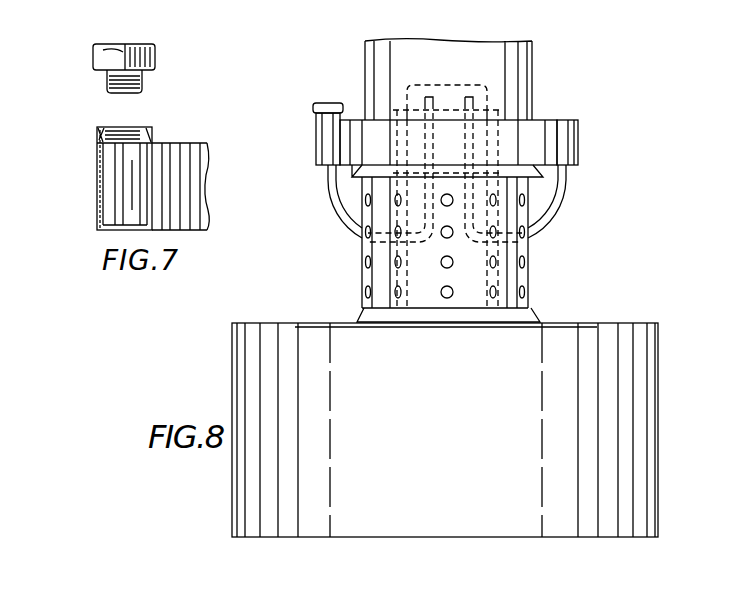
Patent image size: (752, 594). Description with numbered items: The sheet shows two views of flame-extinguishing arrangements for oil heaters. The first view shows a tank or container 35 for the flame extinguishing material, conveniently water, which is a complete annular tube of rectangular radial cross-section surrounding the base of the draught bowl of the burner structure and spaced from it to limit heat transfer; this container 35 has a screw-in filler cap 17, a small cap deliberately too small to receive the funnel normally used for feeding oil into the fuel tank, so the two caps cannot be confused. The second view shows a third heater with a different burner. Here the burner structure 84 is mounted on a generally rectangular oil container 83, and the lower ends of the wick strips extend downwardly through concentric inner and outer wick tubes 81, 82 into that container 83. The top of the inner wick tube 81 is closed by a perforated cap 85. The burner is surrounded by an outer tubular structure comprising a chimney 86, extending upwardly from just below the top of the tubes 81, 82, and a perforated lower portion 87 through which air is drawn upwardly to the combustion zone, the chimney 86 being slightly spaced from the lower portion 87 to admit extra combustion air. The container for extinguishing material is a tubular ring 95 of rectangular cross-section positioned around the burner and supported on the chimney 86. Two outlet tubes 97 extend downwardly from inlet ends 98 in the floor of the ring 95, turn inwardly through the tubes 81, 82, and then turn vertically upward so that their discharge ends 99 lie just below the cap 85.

In FIG. 7, the filler cap 17 is at (106, 54).
In FIG. 7, the container 35 is at (97, 194).
In FIG. 8, the inner wick tube 81 is at (488, 277).
In FIG. 8, the outer wick tube 82 is at (522, 282).
In FIG. 8, the oil container 83 is at (272, 333).
In FIG. 8, the burner structure 84 is at (352, 277).
In FIG. 8, the perforated cap 85 is at (405, 95).
In FIG. 8, the chimney 86 is at (376, 53).
In FIG. 8, the perforated lower portion 87 is at (528, 265).
In FIG. 8, the tubular ring 95 is at (578, 152).
In FIG. 8, the outlet tubes 97 is at (560, 214).
In FIG. 8, the inlet ends 98 is at (578, 148).
In FIG. 8, the discharge ends 99 is at (469, 97).